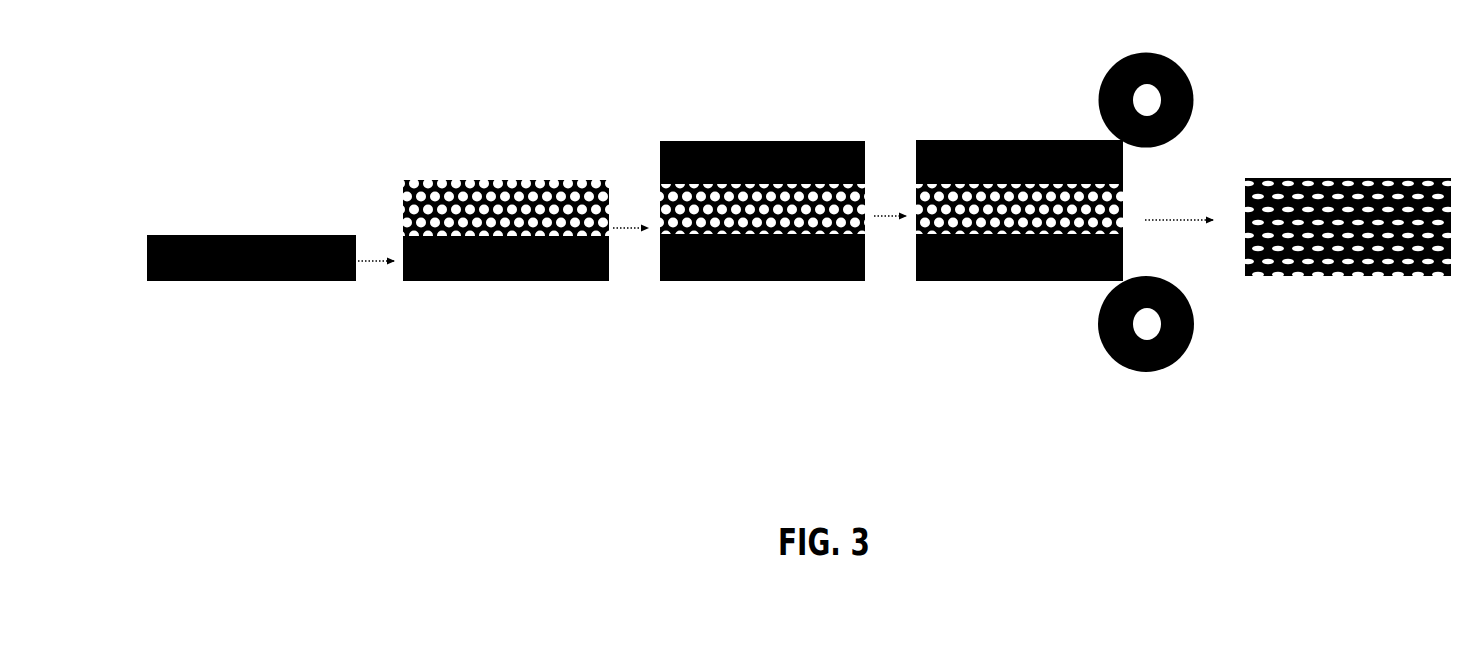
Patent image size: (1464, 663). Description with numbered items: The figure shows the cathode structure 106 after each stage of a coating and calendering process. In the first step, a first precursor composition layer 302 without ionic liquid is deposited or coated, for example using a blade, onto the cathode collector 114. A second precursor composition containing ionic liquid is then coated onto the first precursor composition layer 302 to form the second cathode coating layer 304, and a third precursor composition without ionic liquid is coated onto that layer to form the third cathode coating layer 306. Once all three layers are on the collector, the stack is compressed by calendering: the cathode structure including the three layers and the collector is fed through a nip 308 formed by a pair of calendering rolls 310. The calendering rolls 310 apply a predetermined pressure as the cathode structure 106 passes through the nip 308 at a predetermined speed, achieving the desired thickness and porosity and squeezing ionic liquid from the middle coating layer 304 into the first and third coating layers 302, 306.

The cathode structure 106 is at (114, 153).
The cathode collector 114 is at (241, 286).
The first precursor composition layer 302 is at (180, 226).
The second cathode coating layer 304 is at (465, 172).
The third cathode coating layer 306 is at (718, 133).
The nip 308 is at (1160, 163).
The calendering rolls 310 is at (1192, 81).